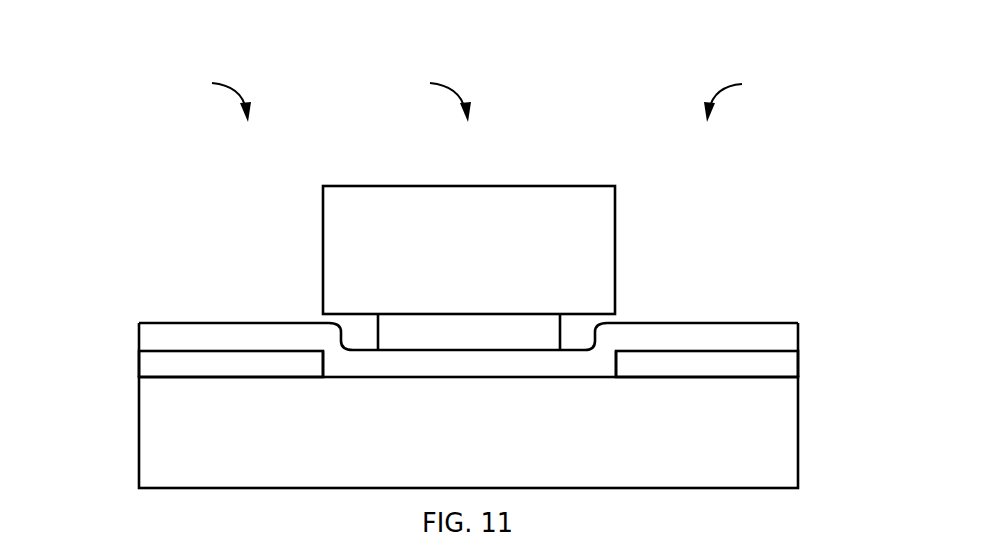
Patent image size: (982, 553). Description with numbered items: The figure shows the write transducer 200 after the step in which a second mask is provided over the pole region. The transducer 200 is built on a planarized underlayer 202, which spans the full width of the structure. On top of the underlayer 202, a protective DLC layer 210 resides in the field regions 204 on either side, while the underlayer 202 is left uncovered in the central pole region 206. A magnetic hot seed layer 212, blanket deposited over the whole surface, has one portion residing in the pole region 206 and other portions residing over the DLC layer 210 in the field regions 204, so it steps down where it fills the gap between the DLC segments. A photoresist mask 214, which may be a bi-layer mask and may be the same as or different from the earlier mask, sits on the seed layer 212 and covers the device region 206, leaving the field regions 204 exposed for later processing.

The write transducer 200 is at (492, 62).
The planarized underlayer 202 is at (799, 463).
The field regions 204 is at (477, 96).
The pole region 206 is at (421, 96).
The DLC layer 210 is at (138, 373).
The seed layer 212 is at (138, 330).
The photoresist mask 214 is at (652, 273).